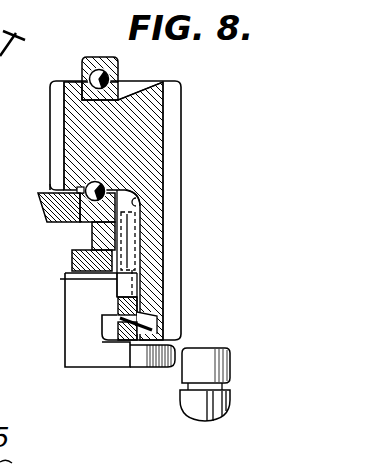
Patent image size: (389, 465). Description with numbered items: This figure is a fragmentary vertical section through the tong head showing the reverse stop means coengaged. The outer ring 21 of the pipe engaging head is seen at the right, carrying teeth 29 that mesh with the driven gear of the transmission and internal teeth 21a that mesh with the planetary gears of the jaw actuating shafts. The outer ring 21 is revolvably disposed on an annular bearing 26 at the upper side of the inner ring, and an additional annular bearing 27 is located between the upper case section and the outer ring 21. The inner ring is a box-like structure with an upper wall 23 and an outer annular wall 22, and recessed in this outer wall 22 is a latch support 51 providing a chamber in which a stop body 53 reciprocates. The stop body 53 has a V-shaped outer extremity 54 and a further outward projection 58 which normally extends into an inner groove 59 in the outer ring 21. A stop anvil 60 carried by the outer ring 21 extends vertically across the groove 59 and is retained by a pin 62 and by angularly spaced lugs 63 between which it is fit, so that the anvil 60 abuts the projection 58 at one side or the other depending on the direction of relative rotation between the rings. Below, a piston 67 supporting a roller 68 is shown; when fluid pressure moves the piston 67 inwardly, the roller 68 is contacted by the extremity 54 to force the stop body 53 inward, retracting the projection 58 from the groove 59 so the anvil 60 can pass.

The outer ring assembly 21 is at (183, 110).
The internal teeth 21a is at (50, 114).
The teeth 29 is at (173, 152).
The annular bearing 27 is at (103, 57).
The annular bearing 26 is at (78, 175).
The upper wall 23 is at (40, 201).
The outer annular wall 22 is at (92, 237).
The latch support 51 is at (72, 262).
The stop anvil 60 is at (65, 279).
The stop body 53 is at (78, 348).
The V-shaped outer extremity 54 is at (135, 363).
The outward projection 58 is at (133, 297).
The inner groove 59 is at (117, 285).
The pin 62 is at (150, 322).
The lugs 63 is at (140, 198).
The roller 68 is at (185, 375).
The piston 67 is at (218, 412).